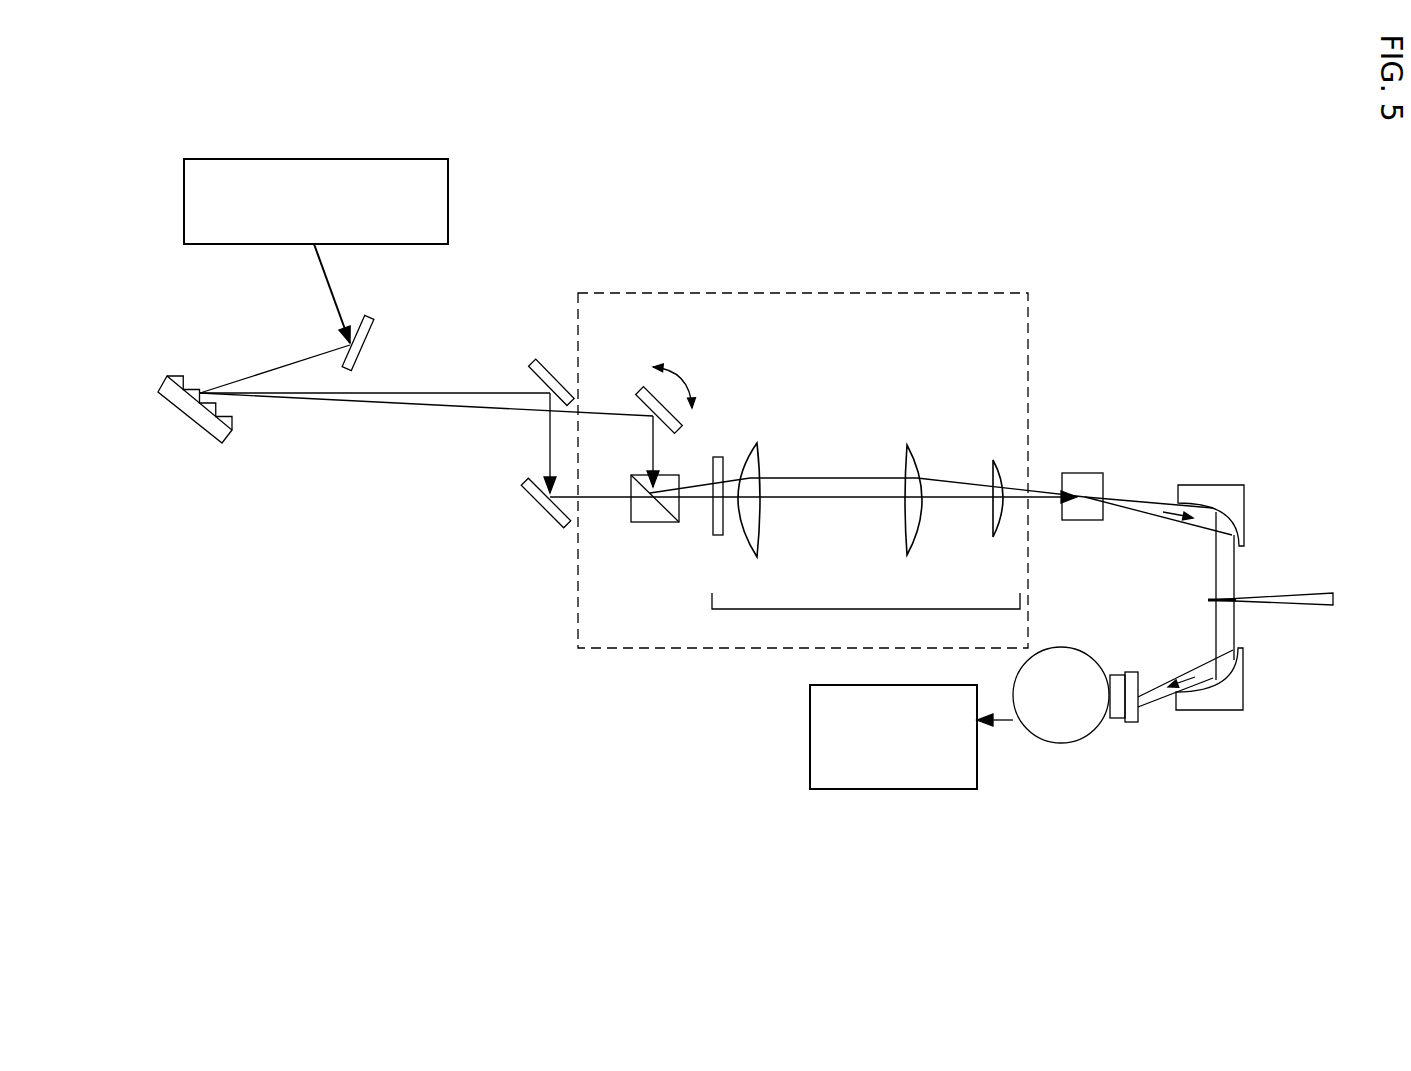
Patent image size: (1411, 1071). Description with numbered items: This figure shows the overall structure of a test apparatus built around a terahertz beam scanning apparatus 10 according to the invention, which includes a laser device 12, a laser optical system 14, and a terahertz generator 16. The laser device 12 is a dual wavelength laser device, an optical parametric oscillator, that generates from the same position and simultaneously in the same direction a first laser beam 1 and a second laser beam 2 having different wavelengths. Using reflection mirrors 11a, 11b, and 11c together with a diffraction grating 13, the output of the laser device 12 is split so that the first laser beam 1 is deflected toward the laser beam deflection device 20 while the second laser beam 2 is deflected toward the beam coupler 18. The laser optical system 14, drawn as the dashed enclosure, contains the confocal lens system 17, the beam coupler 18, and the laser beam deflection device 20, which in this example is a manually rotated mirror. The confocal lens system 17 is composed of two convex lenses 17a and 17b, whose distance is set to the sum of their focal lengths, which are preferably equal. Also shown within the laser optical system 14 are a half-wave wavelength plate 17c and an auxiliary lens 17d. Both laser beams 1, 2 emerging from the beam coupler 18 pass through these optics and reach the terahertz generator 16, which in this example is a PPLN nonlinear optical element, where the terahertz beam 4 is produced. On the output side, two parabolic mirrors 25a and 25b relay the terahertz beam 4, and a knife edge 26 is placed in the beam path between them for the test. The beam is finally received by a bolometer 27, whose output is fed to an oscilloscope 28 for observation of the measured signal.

The first laser beam 1 is at (480, 412).
The second laser beam 2 is at (482, 392).
The measurement light 4 is at (1175, 520).
The terahertz beam scanning apparatus 10 is at (1073, 278).
The reflection mirror 11a is at (372, 328).
The reflection mirror 11b is at (535, 362).
The reflection mirror 11c is at (552, 515).
The laser device 12 is at (435, 192).
The diffraction grating 13 is at (200, 418).
The laser optical system 14 is at (892, 290).
The terahertz generator 16 is at (1085, 483).
The confocal lens system 17 is at (866, 617).
The convex lens 17a is at (755, 537).
The convex lens 17b is at (913, 537).
The λ/2 wavelength plate 17c is at (718, 463).
The auxiliary lens 17d is at (992, 462).
The beam coupler 18 is at (648, 512).
The laser beam deflection device 20 is at (655, 408).
The parabolic mirror 25a is at (1232, 492).
The parabolic mirror 25b is at (1230, 702).
The knife edge 26 is at (1307, 602).
The bolometer 27 is at (1077, 720).
The oscilloscope 28 is at (907, 752).